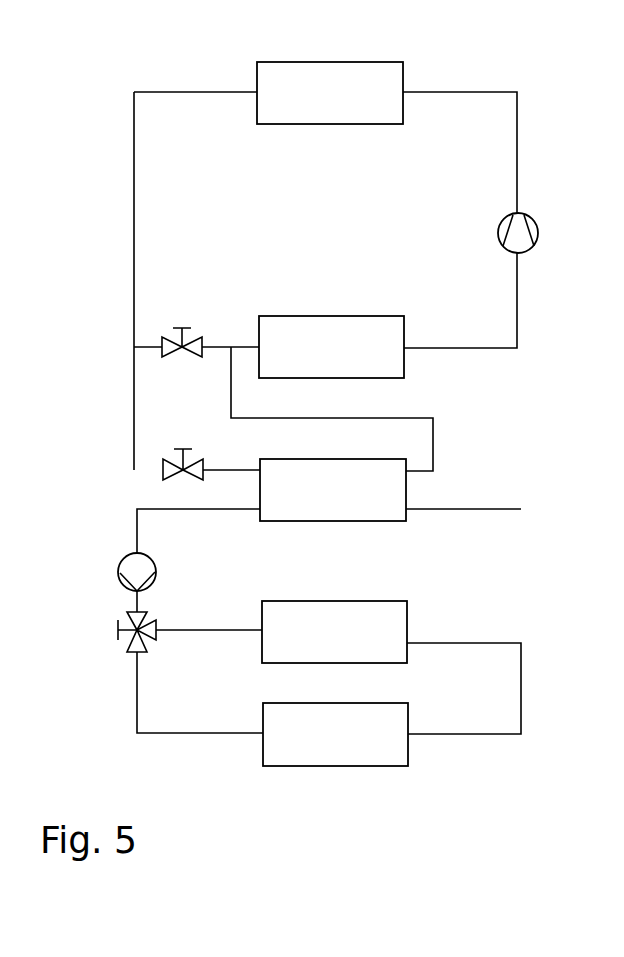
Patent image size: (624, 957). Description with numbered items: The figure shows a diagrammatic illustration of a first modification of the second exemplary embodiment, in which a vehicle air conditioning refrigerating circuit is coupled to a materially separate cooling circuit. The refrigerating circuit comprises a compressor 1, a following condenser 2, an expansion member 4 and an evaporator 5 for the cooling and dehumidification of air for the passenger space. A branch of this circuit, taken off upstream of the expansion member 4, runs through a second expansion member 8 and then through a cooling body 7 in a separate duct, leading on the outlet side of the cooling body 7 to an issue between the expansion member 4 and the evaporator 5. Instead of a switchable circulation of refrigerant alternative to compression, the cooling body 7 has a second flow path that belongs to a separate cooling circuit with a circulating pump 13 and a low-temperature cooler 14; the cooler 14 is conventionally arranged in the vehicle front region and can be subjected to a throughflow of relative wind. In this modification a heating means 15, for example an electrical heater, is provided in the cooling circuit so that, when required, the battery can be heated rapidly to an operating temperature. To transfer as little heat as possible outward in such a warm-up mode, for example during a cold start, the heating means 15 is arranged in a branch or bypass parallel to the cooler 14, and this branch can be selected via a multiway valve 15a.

The compressor 1 is at (523, 230).
The condenser 2 is at (322, 104).
The expansion member 4 is at (198, 337).
The evaporator 5 is at (321, 365).
The cooling body 7 is at (321, 505).
The second expansion member 8 is at (185, 468).
The circulating pump 13 is at (130, 567).
The low-temperature cooler 14 is at (313, 652).
The heating means 15 is at (316, 760).
The multiway valve 15a is at (127, 648).